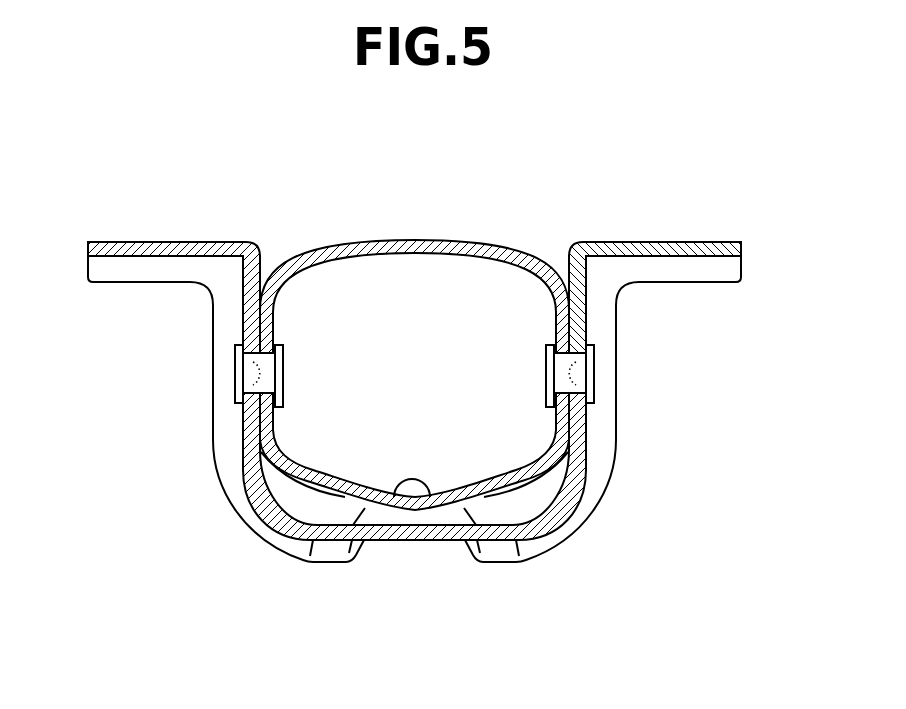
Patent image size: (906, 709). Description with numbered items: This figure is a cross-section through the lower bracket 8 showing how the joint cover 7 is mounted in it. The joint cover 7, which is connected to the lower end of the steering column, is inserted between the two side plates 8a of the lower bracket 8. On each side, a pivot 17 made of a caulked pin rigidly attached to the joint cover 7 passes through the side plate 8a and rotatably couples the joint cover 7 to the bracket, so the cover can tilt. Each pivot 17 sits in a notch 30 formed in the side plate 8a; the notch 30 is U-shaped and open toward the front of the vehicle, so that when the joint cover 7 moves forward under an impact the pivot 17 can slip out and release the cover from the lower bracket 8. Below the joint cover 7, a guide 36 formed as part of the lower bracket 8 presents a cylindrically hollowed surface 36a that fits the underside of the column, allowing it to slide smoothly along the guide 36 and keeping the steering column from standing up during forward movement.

The joint cover 7 is at (437, 240).
The lower bracket 8 is at (709, 226).
The side plates 8a is at (243, 320).
The pivot 17 is at (284, 368).
The notch 30 is at (245, 405).
The guide 36 is at (463, 545).
The cylindrically hollowed surface 36a is at (392, 492).